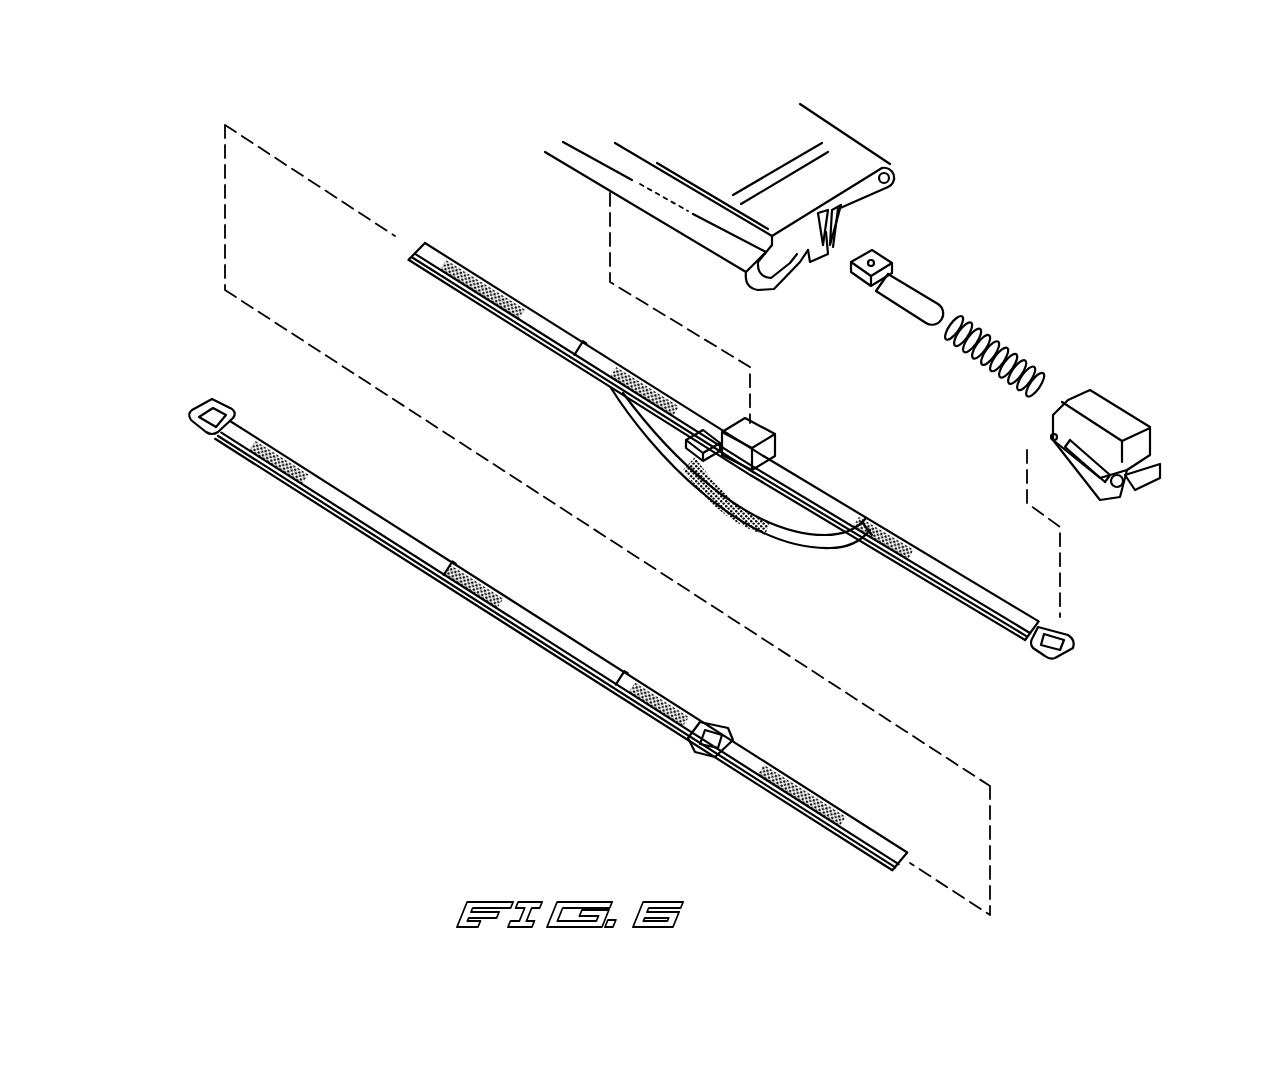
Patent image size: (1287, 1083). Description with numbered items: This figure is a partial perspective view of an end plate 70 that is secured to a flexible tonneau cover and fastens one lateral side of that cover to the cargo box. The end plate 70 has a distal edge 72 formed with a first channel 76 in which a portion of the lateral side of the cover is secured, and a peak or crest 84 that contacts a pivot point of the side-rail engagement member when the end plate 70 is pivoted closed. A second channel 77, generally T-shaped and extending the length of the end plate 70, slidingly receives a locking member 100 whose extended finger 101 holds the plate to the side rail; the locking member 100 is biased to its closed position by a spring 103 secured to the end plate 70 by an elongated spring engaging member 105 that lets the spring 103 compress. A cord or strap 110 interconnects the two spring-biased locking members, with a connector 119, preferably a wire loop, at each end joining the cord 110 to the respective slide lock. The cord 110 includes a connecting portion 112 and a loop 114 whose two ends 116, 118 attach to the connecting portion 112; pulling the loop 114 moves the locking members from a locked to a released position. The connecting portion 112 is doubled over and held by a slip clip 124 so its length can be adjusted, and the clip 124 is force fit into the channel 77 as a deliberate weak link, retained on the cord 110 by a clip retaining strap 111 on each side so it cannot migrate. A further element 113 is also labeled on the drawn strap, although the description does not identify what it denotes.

The end plate 70 is at (840, 158).
The distal edge 72 is at (905, 151).
The first channel 76 is at (900, 194).
The peak or crest 84 is at (727, 265).
The second channel 77 is at (826, 270).
The elongated spring engaging member 105 is at (920, 292).
The spring 103 is at (1027, 357).
The locking member 100 is at (1115, 402).
The extended finger 101 is at (1143, 480).
The clip 124 is at (775, 428).
The end of the pull loop 116 is at (613, 390).
The clip retaining strap 111 is at (700, 447).
The cord or strap 110 is at (877, 510).
The connecting portion 112 is at (952, 572).
The loop 114 is at (784, 548).
The end of the pull loop 118 is at (868, 545).
The connector 119 is at (195, 432).
The lower strap 113 is at (688, 744).